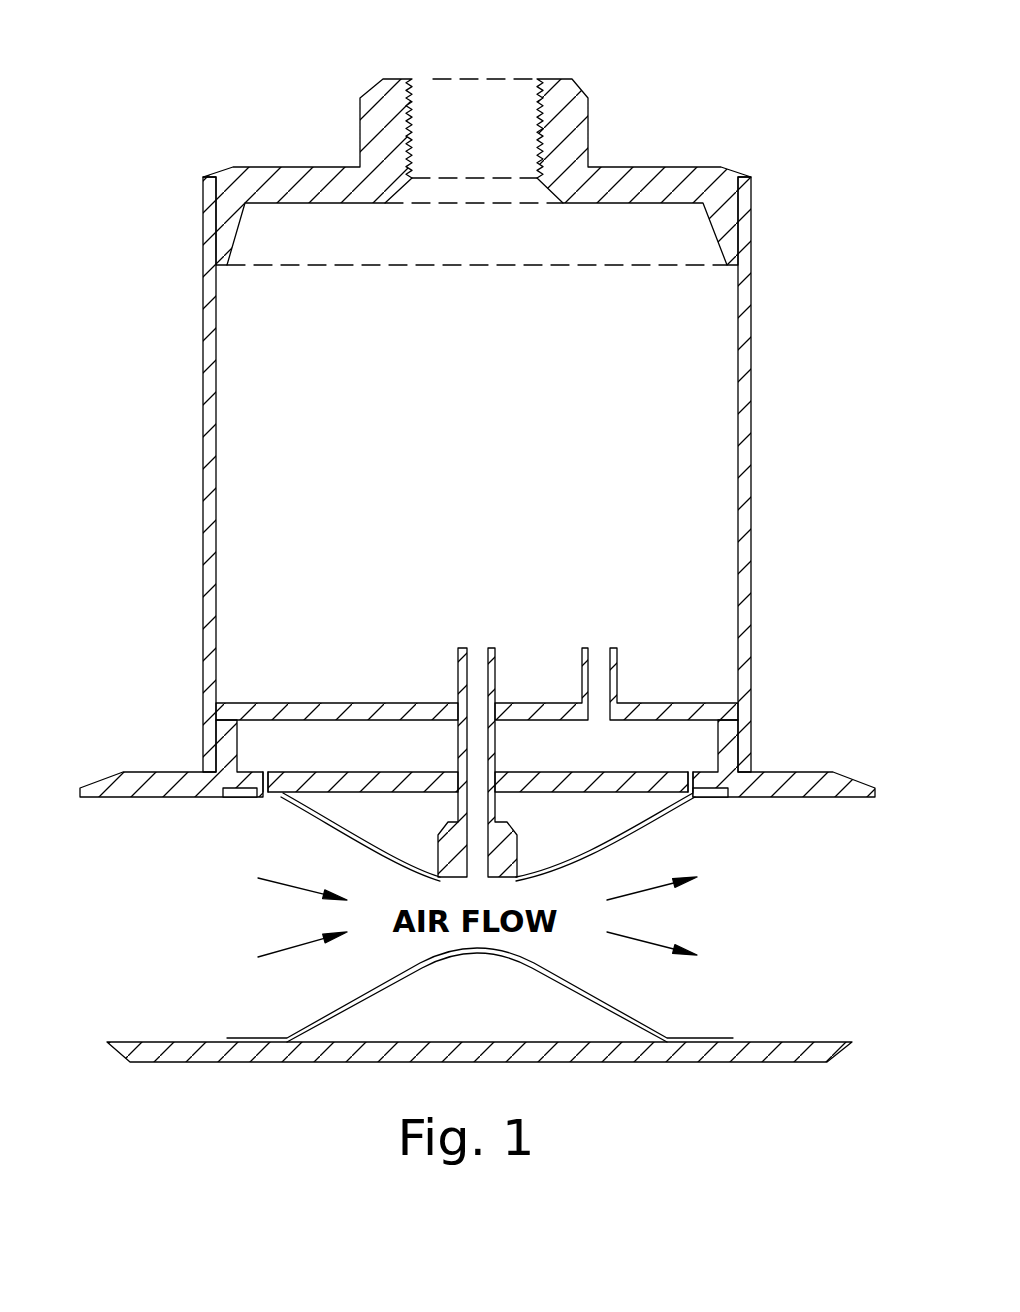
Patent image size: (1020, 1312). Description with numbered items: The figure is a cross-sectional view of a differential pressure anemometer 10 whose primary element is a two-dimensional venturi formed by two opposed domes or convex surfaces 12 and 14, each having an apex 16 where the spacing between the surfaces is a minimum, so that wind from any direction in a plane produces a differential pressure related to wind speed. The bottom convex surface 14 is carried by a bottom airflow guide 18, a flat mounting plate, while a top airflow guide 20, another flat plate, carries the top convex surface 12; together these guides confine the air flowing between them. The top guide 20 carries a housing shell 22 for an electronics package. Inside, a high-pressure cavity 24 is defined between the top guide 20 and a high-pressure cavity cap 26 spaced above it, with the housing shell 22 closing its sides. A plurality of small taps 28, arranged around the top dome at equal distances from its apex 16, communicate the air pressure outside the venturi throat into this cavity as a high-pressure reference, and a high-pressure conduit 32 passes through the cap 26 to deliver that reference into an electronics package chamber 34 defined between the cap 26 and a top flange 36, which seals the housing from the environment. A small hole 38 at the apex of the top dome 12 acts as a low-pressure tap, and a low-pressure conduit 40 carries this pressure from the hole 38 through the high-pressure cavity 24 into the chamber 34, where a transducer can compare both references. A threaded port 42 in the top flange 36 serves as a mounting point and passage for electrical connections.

The differential pressure anemometer 10 is at (663, 130).
The top convex surface 12 is at (323, 817).
The bottom convex surface 14 is at (327, 1013).
The apex 16 is at (462, 878).
The bottom airflow guide 18 is at (133, 1040).
The top airflow guide 20 is at (133, 772).
The housing shell 22 is at (203, 565).
The high-pressure cavity 24 is at (422, 745).
The high-pressure cavity cap 26 is at (325, 703).
The taps 28 is at (268, 772).
The high-pressure conduit 32 is at (612, 648).
The electronics package chamber 34 is at (260, 343).
The top flange 36 is at (290, 166).
The hole 38 is at (478, 877).
The low-pressure conduit 40 is at (495, 648).
The threaded port 42 is at (507, 97).